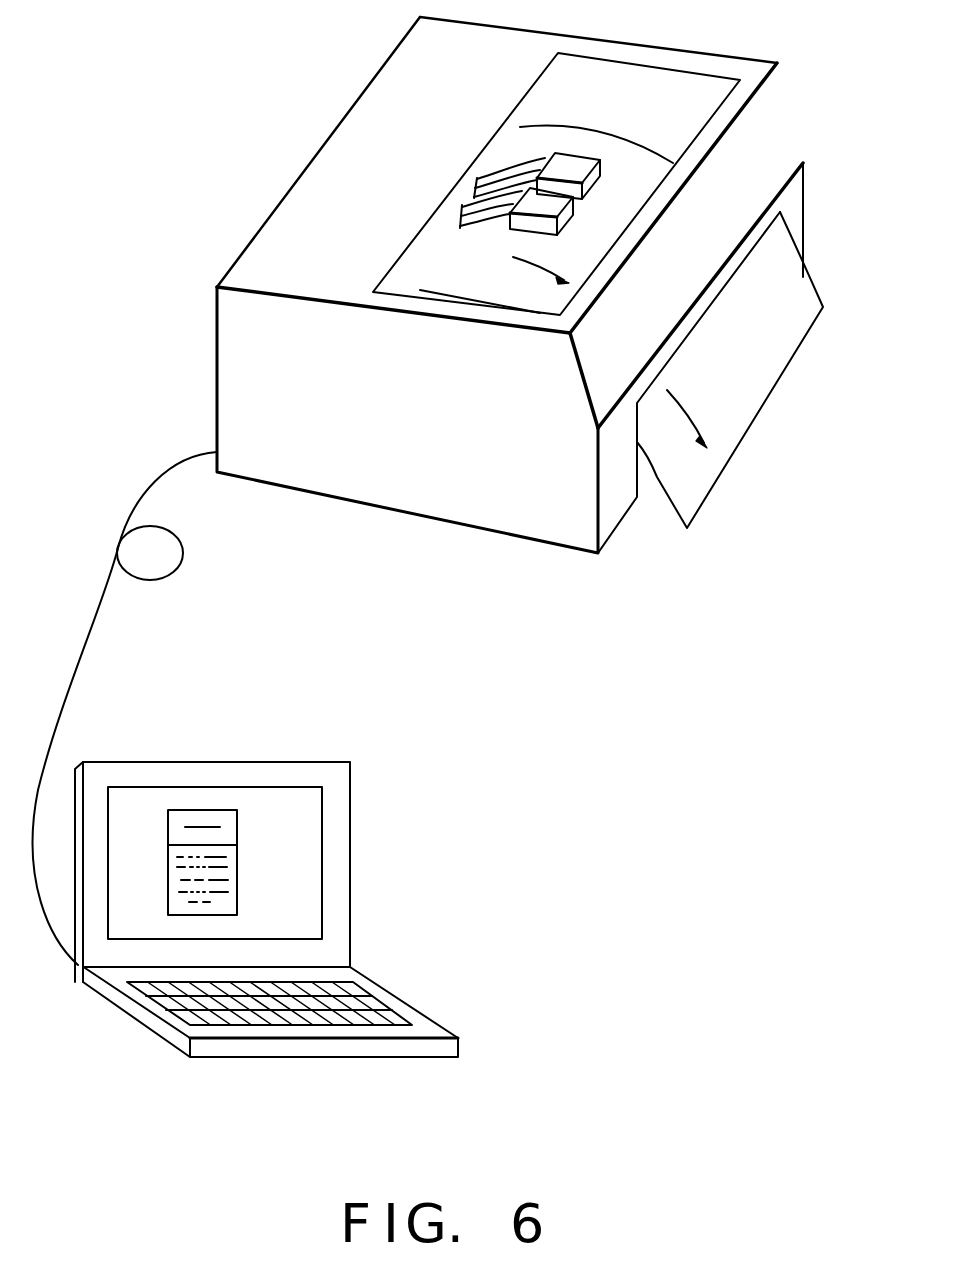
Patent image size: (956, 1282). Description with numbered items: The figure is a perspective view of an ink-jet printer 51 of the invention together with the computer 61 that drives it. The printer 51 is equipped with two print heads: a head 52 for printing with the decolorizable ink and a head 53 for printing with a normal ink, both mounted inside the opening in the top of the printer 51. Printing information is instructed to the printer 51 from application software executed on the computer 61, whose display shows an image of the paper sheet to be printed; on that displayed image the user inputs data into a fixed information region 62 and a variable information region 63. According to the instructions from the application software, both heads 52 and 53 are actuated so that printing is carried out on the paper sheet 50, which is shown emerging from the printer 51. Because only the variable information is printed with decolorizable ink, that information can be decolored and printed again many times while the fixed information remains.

The paper sheet 50 is at (753, 418).
The printer 51 is at (363, 152).
The head for printing with the decolorizable ink 52 is at (582, 168).
The head for printing with the normal ink 53 is at (574, 225).
The computer 61 is at (289, 750).
The fixed information region 62 is at (192, 815).
The variable information region 63 is at (232, 898).